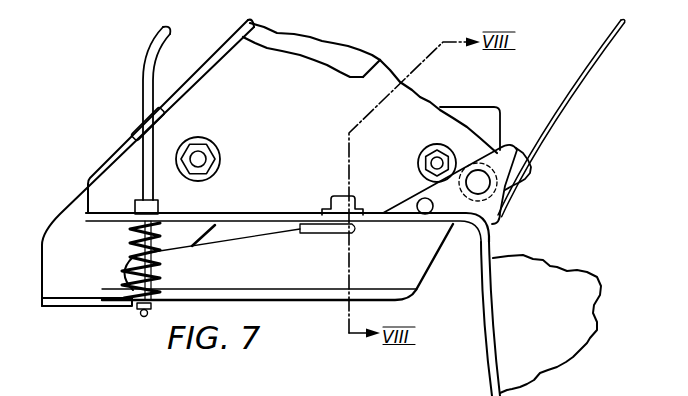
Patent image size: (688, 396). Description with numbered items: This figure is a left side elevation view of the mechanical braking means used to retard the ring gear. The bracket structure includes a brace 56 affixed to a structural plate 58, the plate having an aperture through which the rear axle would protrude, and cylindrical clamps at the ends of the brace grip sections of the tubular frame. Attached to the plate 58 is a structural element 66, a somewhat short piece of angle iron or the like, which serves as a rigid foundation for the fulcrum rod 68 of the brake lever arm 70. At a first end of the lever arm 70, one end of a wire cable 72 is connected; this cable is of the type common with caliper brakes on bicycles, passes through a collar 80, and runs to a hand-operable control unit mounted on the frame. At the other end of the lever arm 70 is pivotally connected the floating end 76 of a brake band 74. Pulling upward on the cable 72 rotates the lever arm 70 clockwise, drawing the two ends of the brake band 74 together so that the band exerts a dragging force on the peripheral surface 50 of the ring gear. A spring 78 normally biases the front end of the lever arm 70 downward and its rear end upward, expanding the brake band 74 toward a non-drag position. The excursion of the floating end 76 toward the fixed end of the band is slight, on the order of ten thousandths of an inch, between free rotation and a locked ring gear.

The peripheral surface 50 is at (494, 345).
The brace 56 is at (352, 47).
The structural plate 58 is at (440, 104).
The structural element 66 is at (275, 213).
The fulcrum rod 68 is at (418, 198).
The brake lever arm 70 is at (438, 263).
The wire cable 72 is at (145, 61).
The brake band 74 is at (601, 42).
The floating end 76 is at (504, 192).
The spring 78 is at (127, 247).
The collar 80 is at (158, 207).